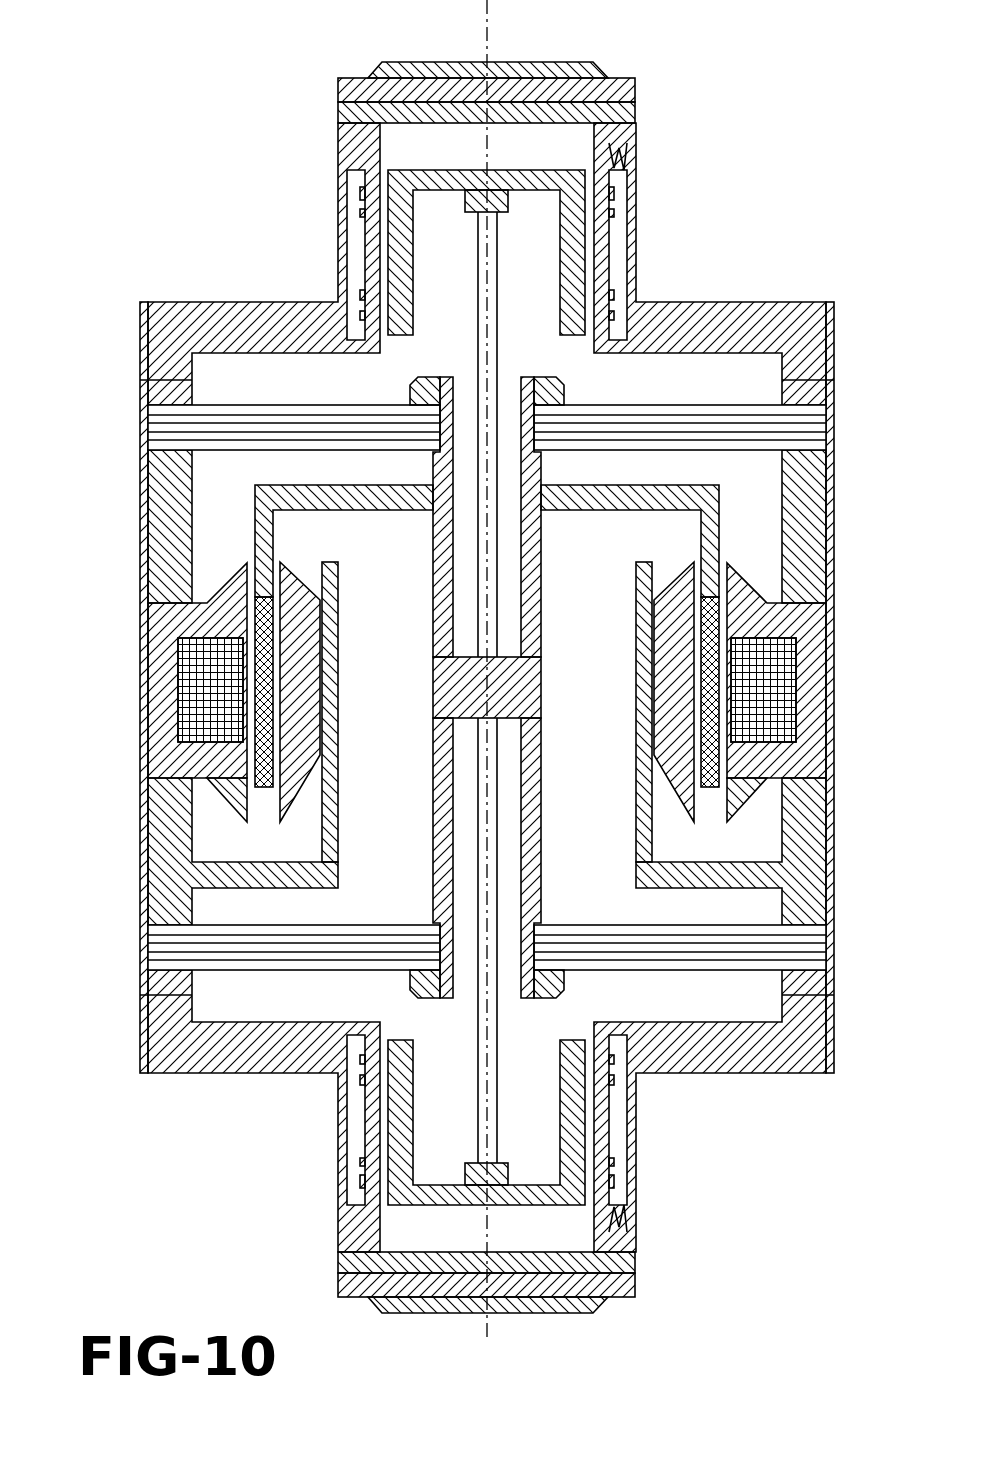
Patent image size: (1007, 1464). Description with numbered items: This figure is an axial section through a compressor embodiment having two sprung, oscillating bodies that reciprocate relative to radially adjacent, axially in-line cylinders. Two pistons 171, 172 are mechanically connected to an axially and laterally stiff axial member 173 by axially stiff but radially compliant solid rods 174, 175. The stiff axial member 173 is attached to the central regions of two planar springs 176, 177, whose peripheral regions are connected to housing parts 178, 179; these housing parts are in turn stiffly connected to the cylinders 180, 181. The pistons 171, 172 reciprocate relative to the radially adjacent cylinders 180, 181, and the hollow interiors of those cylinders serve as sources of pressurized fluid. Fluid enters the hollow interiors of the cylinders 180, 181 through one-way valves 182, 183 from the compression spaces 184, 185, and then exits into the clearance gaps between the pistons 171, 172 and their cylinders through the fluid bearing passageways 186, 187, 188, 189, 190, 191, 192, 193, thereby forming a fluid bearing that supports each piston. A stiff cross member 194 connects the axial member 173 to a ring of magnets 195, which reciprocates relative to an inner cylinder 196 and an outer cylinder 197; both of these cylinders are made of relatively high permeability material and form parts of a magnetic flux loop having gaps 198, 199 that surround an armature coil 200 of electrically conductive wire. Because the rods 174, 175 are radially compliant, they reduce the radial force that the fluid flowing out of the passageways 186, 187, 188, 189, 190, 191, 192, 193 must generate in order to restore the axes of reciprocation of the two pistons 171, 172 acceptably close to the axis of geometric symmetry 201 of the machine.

The piston 171 is at (445, 1195).
The piston 172 is at (446, 180).
The axial member 173 is at (518, 690).
The rod 174 is at (497, 290).
The rod 175 is at (497, 1088).
The planar spring 176 is at (265, 432).
The planar spring 177 is at (375, 950).
The housing part 178 is at (160, 516).
The housing part 179 is at (160, 885).
The cylinder 180 is at (348, 143).
The cylinder 181 is at (352, 1228).
The one-way valve 182 is at (617, 161).
The one-way valve 183 is at (618, 1218).
The compression space 184 is at (557, 153).
The compression space 185 is at (557, 1222).
The passageway 186 is at (607, 205).
The passageway 187 is at (603, 1168).
The passageway 188 is at (600, 300).
The passageway 189 is at (603, 1075).
The passageway 190 is at (372, 205).
The passageway 191 is at (372, 1168).
The passageway 192 is at (375, 295).
The passageway 193 is at (373, 1075).
The cross member 194 is at (392, 500).
The ring of magnets 195 is at (268, 650).
The inner cylinder 196 is at (297, 757).
The outer cylinder 197 is at (232, 788).
The gap 198 is at (697, 553).
The gap 199 is at (707, 817).
The armature coil 200 is at (215, 707).
The axis of geometric symmetry 201 is at (490, 770).